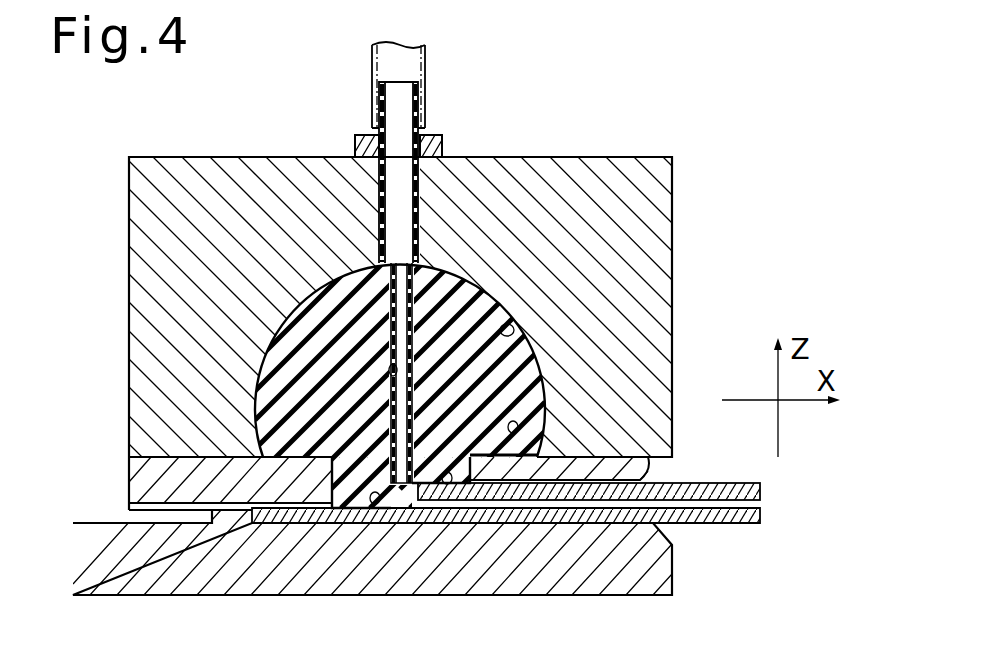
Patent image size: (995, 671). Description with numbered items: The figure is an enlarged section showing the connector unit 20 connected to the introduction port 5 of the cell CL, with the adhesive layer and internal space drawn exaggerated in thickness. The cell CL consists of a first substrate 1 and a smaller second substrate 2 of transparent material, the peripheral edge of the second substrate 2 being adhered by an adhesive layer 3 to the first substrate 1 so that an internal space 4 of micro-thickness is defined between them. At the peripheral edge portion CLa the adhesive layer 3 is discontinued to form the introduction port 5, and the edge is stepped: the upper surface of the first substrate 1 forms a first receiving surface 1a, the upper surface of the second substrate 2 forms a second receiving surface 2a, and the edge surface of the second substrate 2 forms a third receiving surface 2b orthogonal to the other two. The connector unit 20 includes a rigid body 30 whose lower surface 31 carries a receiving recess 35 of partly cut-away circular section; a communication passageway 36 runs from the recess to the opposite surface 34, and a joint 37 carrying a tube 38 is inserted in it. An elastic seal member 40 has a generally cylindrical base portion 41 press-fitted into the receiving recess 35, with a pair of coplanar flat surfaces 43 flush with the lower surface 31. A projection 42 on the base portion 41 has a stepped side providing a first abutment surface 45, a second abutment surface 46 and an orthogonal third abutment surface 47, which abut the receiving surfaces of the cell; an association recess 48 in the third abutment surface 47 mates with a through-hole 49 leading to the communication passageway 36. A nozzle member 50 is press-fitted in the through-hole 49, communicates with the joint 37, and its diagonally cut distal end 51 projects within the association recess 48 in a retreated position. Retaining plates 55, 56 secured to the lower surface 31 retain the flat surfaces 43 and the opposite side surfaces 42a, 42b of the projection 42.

The first substrate 1 is at (728, 523).
The first receiving surface 1a is at (348, 537).
The second substrate 2 is at (762, 491).
The second receiving surface 2a is at (487, 500).
The third receiving surface 2b is at (415, 488).
The adhesive layer 3 is at (470, 503).
The internal space 4 is at (698, 503).
The introduction port 5 is at (445, 390).
The connector unit 20 is at (688, 128).
The body 30 is at (690, 183).
The lower surface 31 is at (612, 447).
The surface 34 is at (558, 157).
The receiving recess 35 is at (514, 328).
The communication passageway 36 is at (380, 192).
The joint 37 is at (419, 118).
The tube 38 is at (427, 67).
The seal member 40 is at (278, 298).
The base portion 41 is at (383, 300).
The projection 42 is at (298, 560).
The side surface of projection 42a is at (250, 512).
The side surface of projection 42b is at (575, 512).
The flat surfaces 43 is at (340, 465).
The first abutment surface 45 is at (365, 512).
The second abutment surface 46 is at (520, 505).
The third abutment surface 47 is at (440, 500).
The association recess 48 is at (410, 500).
The through-hole 49 is at (390, 368).
The nozzle member 50 is at (378, 340).
The distal end 51 is at (401, 497).
The retaining plate 55 is at (150, 475).
The retaining plate 56 is at (650, 470).
The cell CL is at (768, 525).
The peripheral edge portion CLa is at (385, 547).